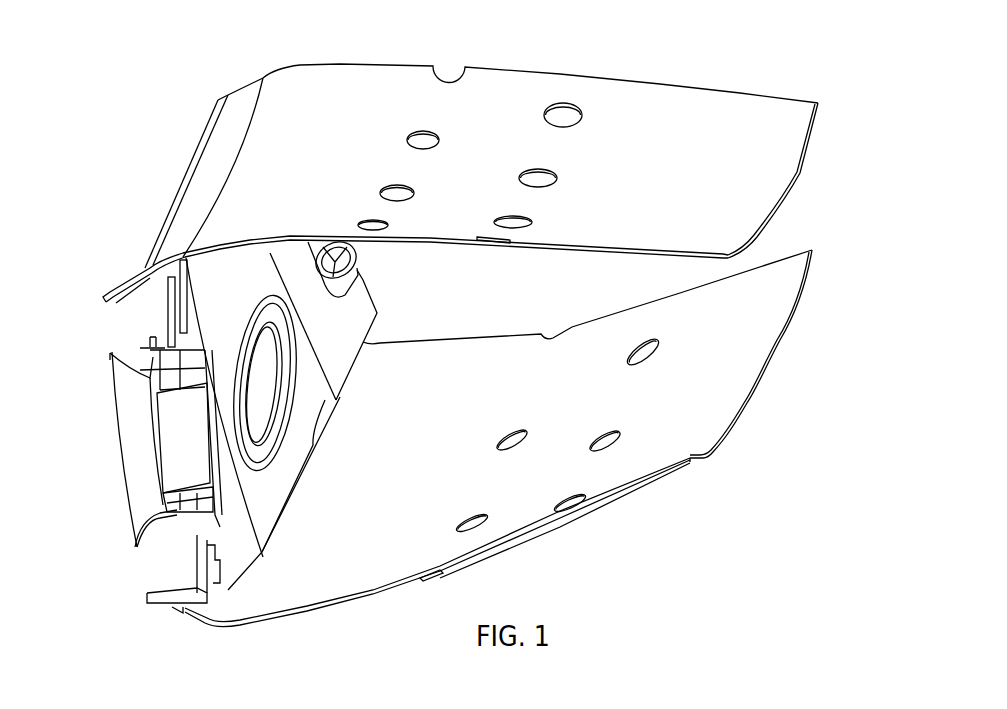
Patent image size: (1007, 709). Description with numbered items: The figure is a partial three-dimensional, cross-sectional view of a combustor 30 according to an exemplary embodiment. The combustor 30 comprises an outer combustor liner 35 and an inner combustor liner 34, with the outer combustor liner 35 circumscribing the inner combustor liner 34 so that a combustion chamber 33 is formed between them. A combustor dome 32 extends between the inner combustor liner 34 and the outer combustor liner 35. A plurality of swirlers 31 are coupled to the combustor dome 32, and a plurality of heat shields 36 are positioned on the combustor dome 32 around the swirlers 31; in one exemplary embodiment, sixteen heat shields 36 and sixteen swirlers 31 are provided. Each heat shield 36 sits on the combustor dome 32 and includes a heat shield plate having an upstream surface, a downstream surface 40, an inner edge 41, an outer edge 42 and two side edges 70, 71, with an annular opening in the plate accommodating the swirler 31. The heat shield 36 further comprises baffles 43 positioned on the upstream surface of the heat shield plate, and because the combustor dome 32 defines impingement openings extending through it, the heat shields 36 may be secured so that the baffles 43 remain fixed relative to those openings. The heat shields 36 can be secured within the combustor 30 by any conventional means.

The combustor 30 is at (466, 324).
The swirler 31 is at (232, 391).
The combustor dome 32 is at (158, 290).
The combustion chamber 33 is at (501, 310).
The inner combustor liner 34 is at (471, 152).
The outer combustor liner 35 is at (521, 485).
The heat shield 36 is at (354, 363).
The downstream surface 40 is at (330, 402).
The inner edge 41 is at (225, 262).
The outer edge 42 is at (303, 488).
The baffle 43 is at (184, 308).
The side edge 70 is at (248, 483).
The side edge 71 is at (276, 260).